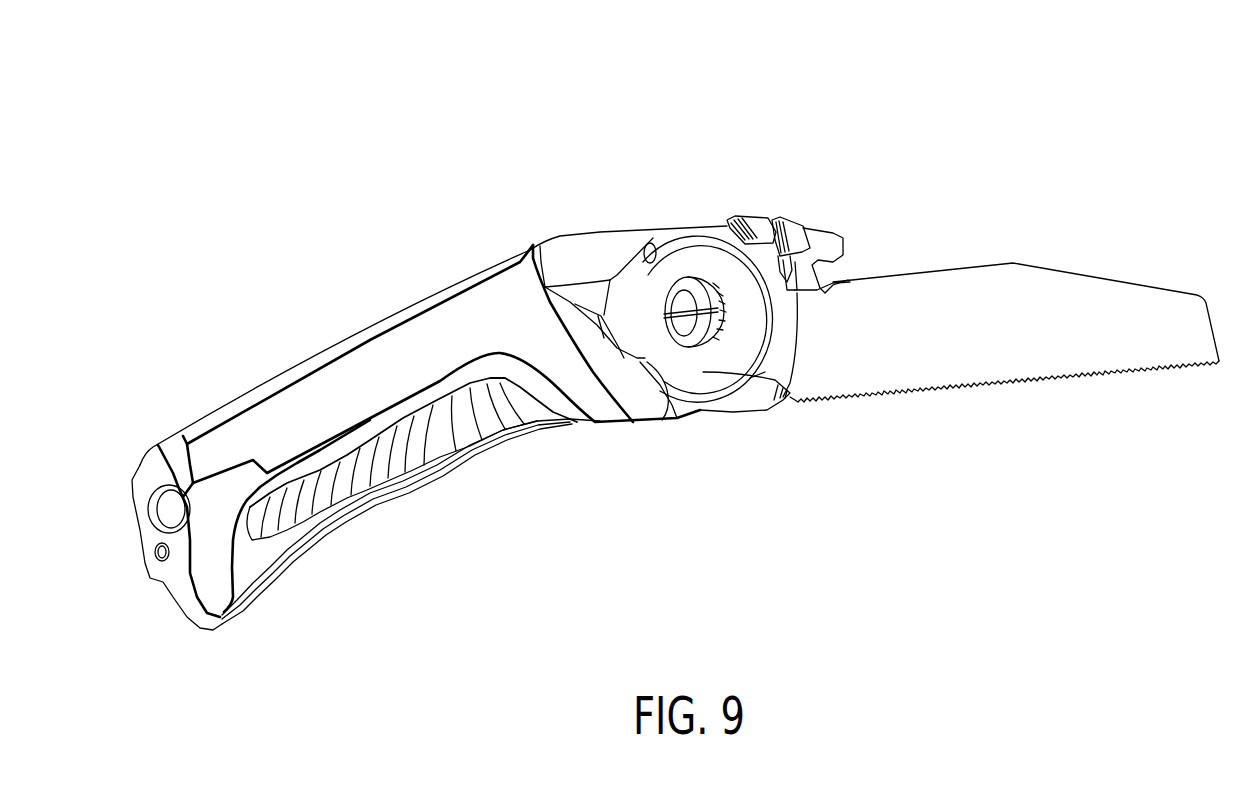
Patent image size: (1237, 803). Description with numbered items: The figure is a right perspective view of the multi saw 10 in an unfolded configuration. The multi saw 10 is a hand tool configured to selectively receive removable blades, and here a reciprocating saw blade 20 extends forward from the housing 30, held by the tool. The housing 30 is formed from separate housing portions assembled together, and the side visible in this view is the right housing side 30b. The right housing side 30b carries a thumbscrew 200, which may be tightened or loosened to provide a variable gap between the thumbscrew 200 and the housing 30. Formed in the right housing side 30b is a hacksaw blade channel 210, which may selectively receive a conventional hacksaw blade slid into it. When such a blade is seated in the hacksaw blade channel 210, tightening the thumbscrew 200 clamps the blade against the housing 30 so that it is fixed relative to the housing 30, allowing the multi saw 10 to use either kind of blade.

The multi saw 10 is at (845, 114).
The reciprocating saw blade 20 is at (963, 285).
The housing 30 is at (490, 302).
The right housing side 30b is at (672, 262).
The thumbscrew 200 is at (703, 340).
The hacksaw blade channel 210 is at (617, 312).